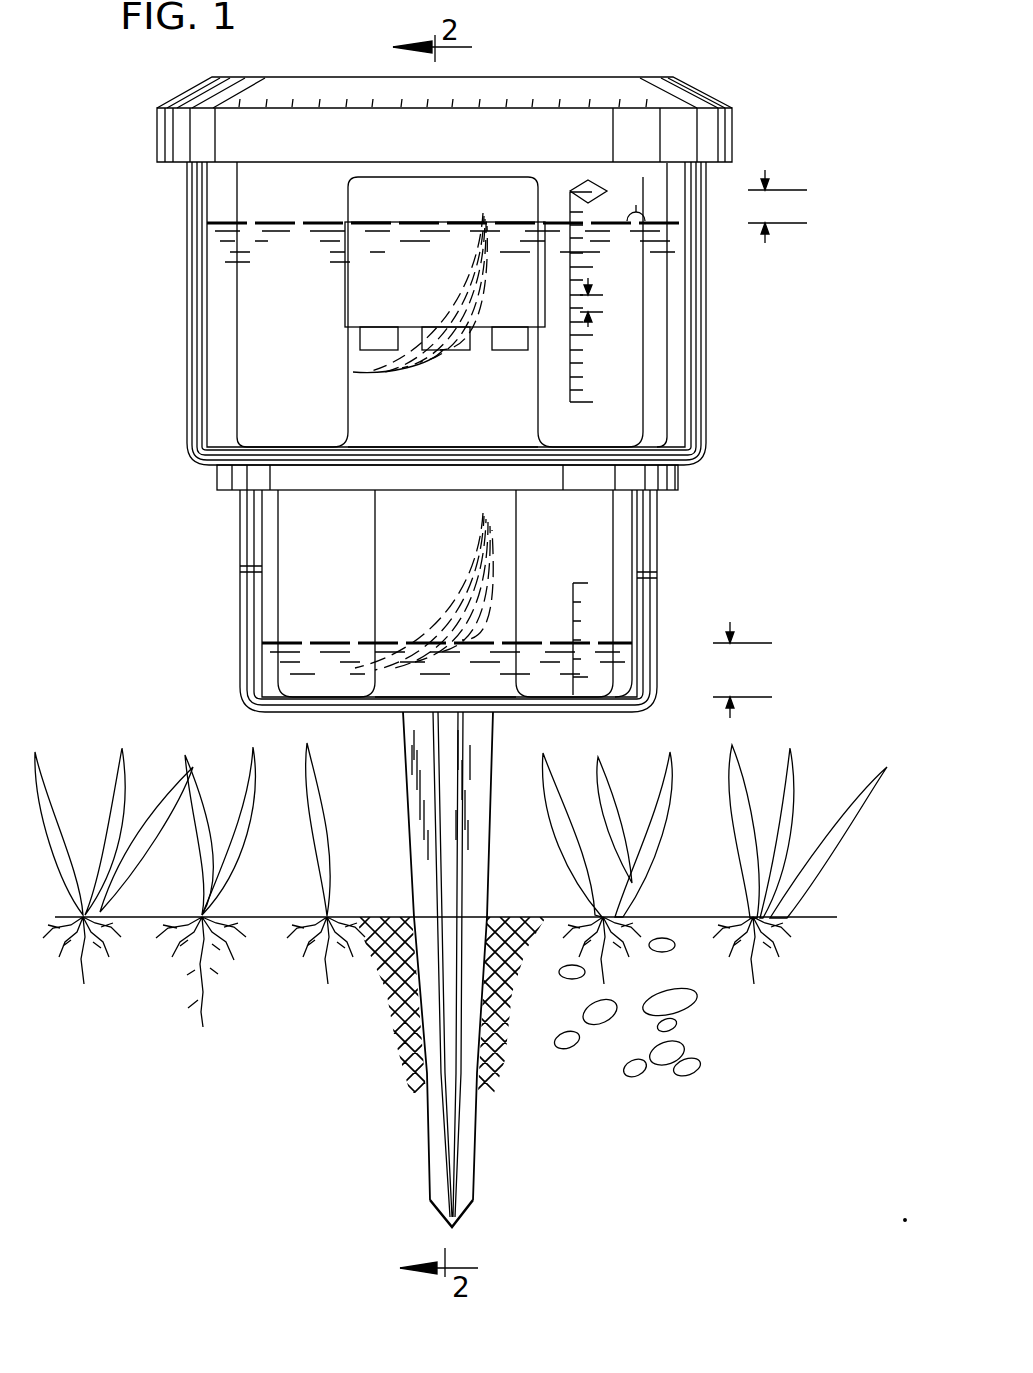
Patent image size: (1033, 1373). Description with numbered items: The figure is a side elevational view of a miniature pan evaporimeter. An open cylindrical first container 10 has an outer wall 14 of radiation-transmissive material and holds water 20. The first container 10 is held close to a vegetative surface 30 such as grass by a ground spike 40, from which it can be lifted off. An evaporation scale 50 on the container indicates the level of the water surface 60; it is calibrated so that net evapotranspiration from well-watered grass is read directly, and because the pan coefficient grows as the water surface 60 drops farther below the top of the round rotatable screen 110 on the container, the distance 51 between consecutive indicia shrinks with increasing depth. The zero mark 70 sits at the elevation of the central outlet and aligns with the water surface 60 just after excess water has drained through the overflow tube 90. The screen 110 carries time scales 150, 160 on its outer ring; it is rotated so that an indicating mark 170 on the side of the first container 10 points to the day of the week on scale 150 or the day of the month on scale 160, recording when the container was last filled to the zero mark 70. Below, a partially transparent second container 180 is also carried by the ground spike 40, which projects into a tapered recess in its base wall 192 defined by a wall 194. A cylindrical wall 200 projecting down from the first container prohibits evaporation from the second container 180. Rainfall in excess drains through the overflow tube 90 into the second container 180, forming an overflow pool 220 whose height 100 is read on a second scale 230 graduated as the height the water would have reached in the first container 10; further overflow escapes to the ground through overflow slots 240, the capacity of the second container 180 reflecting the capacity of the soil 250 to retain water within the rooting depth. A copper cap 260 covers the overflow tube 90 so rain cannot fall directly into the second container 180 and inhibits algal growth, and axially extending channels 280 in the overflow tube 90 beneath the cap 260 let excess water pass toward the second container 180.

The first container 10 is at (712, 447).
The outer wall 14 is at (187, 185).
The water 20 is at (268, 255).
The vegetative surface 30 is at (805, 780).
The ground spike 40 is at (427, 1128).
The evaporation scale 50 is at (590, 337).
The distance between consecutive indicia 51 is at (590, 305).
The water surface 60 is at (645, 235).
The zero mark 70 is at (630, 188).
The overflow tube 90 is at (368, 412).
The height of the water surface 100 is at (607, 642).
The rotatable screen 110 is at (152, 126).
The time scale 150 is at (558, 100).
The time scale 160 is at (597, 102).
The indicating mark 170 is at (600, 183).
The second container 180 is at (230, 612).
The base wall 192 is at (357, 700).
The wall 194 is at (375, 595).
The cylindrical wall 200 is at (217, 478).
The overflow pool 220 is at (307, 672).
The second scale 230 is at (580, 583).
The overflow slots 240 is at (238, 572).
The soil 250 is at (643, 1073).
The copper cap 260 is at (403, 202).
The axially extending channels 280 is at (367, 367).